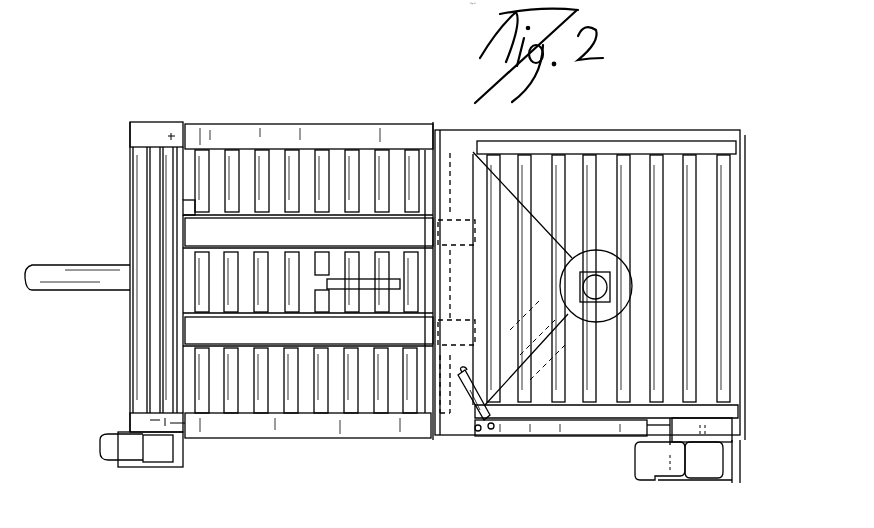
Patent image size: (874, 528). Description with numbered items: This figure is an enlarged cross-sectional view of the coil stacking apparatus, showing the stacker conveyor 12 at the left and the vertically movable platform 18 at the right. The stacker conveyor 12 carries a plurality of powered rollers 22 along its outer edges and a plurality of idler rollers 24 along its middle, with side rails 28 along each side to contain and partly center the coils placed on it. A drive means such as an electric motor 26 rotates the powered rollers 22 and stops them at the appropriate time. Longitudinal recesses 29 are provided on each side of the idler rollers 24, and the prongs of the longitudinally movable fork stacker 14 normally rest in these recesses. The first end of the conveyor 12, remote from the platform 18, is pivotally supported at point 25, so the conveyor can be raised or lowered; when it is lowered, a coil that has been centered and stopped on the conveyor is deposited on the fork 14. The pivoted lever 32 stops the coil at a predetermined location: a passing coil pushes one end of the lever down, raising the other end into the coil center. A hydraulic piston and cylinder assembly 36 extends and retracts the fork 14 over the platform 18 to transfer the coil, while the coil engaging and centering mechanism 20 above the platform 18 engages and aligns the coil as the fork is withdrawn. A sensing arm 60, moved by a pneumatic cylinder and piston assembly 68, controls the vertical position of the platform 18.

The stacker conveyor 12 is at (198, 130).
The fork stacker 14 is at (309, 281).
The platform 18 is at (622, 130).
The coil engaging and centering mechanism 20 is at (565, 272).
The powered rollers 22 is at (326, 155).
The idler rollers 24 is at (390, 256).
The pivot point 25 is at (170, 125).
The electric motor 26 is at (160, 448).
The side rails 28 is at (388, 125).
The longitudinal recesses 29 is at (190, 205).
The pivoted lever 32 is at (338, 285).
The hydraulic piston and cylinder assembly 36 is at (68, 290).
The sensing arm 60 is at (526, 432).
The pneumatic cylinder and piston assembly 68 is at (470, 410).